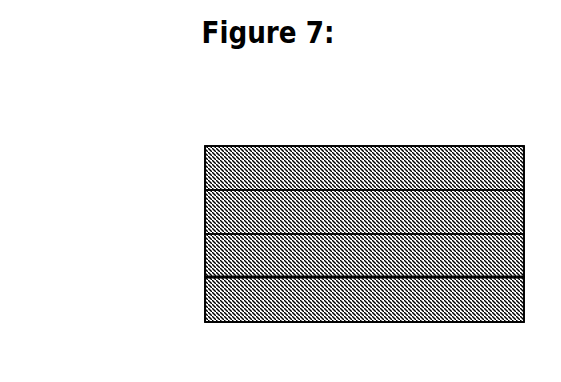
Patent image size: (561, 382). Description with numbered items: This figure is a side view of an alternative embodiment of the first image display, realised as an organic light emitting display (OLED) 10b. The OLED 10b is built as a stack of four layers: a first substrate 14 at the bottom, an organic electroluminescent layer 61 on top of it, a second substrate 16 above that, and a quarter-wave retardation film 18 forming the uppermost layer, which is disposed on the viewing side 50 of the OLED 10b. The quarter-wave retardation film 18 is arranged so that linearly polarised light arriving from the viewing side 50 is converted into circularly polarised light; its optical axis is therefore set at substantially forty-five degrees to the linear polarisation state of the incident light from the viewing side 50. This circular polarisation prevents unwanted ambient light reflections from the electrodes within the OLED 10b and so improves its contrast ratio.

The organic light emitting display 10b is at (138, 123).
The viewing side 50 is at (348, 133).
The quarter-wave retardation film 18 is at (237, 172).
The second substrate 16 is at (237, 214).
The organic electroluminescent layer 61 is at (237, 254).
The first substrate 14 is at (237, 296).